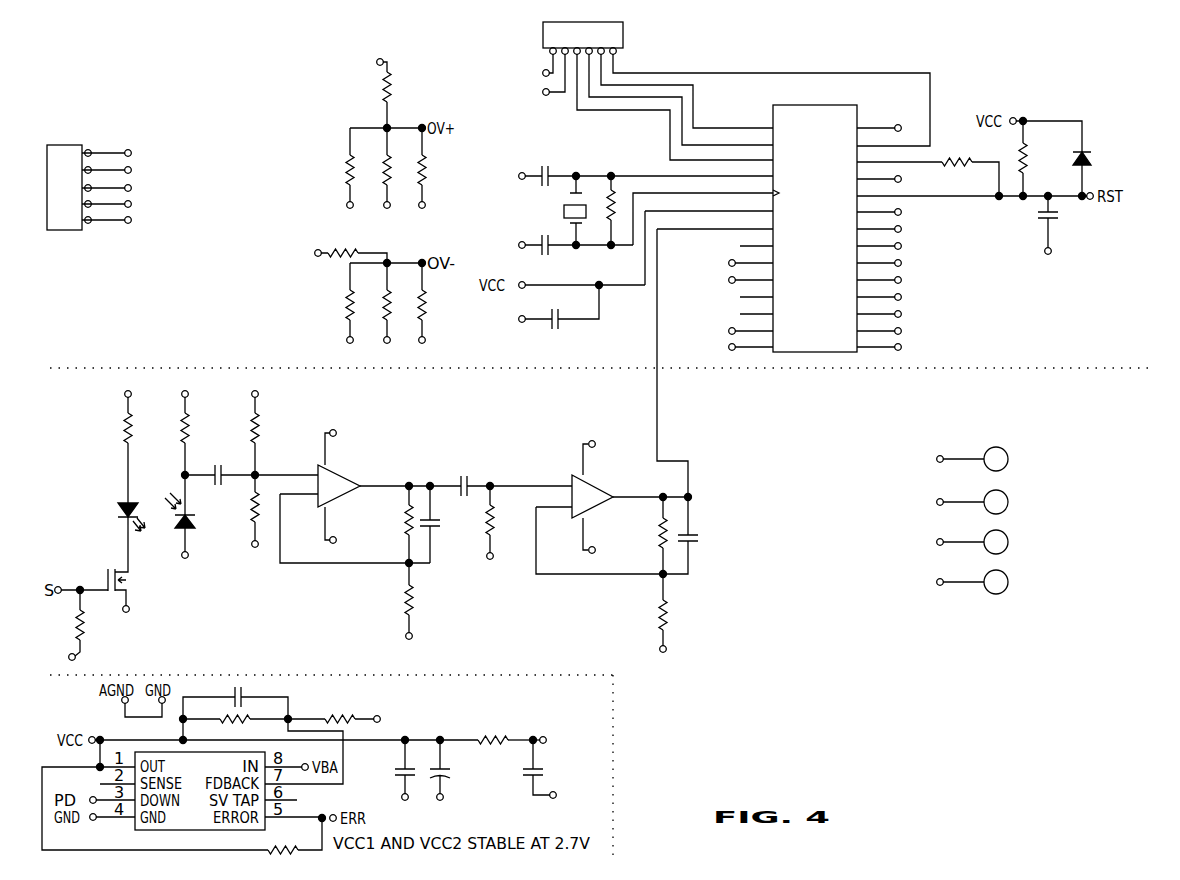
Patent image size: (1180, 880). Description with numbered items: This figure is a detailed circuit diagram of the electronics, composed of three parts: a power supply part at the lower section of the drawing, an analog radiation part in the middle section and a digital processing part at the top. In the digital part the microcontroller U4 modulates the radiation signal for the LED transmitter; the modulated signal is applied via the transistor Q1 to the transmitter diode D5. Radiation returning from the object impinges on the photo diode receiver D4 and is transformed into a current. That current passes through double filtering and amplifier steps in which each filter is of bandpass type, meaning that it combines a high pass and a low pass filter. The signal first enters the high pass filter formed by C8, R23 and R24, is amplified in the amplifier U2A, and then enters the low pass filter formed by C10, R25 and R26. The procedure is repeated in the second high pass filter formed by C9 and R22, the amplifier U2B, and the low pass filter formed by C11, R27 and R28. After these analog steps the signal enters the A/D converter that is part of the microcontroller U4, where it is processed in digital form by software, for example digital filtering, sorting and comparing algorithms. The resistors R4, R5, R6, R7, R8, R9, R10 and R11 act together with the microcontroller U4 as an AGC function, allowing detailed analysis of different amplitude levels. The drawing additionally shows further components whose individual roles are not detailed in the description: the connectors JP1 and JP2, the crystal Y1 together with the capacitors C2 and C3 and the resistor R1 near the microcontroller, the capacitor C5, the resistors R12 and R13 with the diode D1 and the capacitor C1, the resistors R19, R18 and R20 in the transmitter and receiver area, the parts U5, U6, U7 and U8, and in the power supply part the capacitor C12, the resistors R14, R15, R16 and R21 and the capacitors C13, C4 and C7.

The connector JP1 is at (103, 178).
The jumper connector JP2 is at (716, 91).
The AGC resistor R4 is at (373, 90).
The AGC resistor R5 is at (355, 179).
The AGC resistor R6 is at (395, 179).
The AGC resistor R7 is at (430, 179).
The AGC resistor R8 is at (332, 246).
The AGC resistor R9 is at (354, 312).
The AGC resistor R10 is at (396, 312).
The AGC resistor R11 is at (431, 312).
The microcontroller U4 is at (817, 229).
The capacitor C2 is at (627, 166).
The capacitor C3 is at (557, 235).
The crystal Y1 is at (587, 210).
The resistor R1 is at (622, 210).
The capacitor C5 is at (540, 307).
The resistor R12 is at (928, 166).
The resistor R13 is at (1036, 158).
The diode D1 BAS16 D1 is at (1109, 160).
The capacitor C1 is at (1058, 235).
The resistor R19 is at (134, 439).
The transmitter diode D5 is at (88, 523).
The transistor Q1 is at (147, 595).
The resistor R20 is at (61, 628).
The resistor R18 is at (188, 425).
The high pass filter capacitor C8 is at (220, 463).
The photo diode receiver D4 is at (208, 528).
The high pass filter resistor R23 is at (260, 425).
The high pass filter resistor R24 is at (245, 521).
The amplifier U2A is at (320, 487).
The high pass filter capacitor C9 is at (464, 473).
The low pass filter resistor R26 is at (397, 524).
The low pass filter capacitor C10 is at (445, 524).
The low pass filter resistor R25 is at (397, 611).
The high pass filter resistor R22 is at (498, 534).
The amplifier U2B is at (612, 497).
The low pass filter resistor R28 is at (652, 535).
The low pass filter capacitor C11 is at (702, 536).
The low pass filter resistor R27 is at (652, 624).
The mounting hole U5 is at (953, 449).
The mounting hole U6 is at (953, 492).
The mounting hole U7 is at (953, 532).
The mounting hole U8 is at (953, 572).
The capacitor C12 is at (235, 698).
The resistor R14 is at (235, 721).
The resistor R15 is at (349, 713).
The resistor R16 is at (526, 732).
The resistor R21 is at (284, 838).
The capacitor C13 is at (391, 781).
The capacitor C4 is at (450, 781).
The capacitor C7 is at (554, 772).